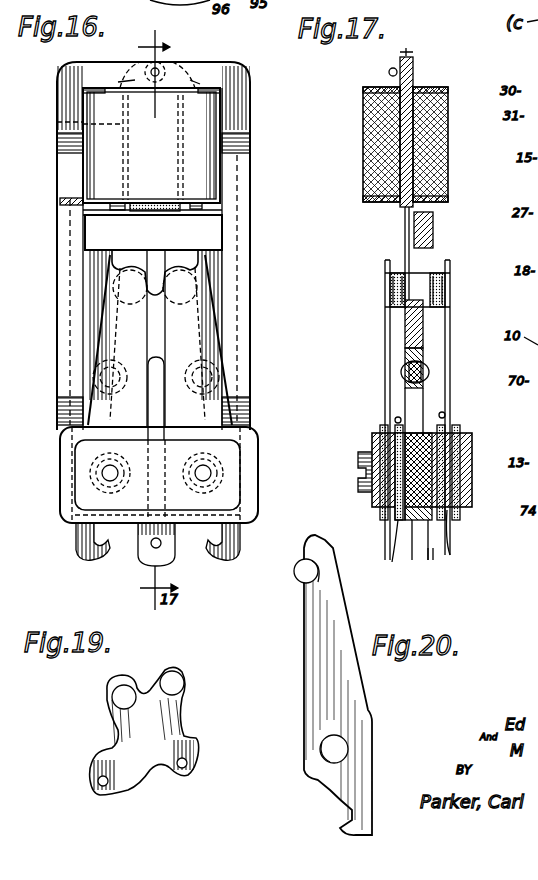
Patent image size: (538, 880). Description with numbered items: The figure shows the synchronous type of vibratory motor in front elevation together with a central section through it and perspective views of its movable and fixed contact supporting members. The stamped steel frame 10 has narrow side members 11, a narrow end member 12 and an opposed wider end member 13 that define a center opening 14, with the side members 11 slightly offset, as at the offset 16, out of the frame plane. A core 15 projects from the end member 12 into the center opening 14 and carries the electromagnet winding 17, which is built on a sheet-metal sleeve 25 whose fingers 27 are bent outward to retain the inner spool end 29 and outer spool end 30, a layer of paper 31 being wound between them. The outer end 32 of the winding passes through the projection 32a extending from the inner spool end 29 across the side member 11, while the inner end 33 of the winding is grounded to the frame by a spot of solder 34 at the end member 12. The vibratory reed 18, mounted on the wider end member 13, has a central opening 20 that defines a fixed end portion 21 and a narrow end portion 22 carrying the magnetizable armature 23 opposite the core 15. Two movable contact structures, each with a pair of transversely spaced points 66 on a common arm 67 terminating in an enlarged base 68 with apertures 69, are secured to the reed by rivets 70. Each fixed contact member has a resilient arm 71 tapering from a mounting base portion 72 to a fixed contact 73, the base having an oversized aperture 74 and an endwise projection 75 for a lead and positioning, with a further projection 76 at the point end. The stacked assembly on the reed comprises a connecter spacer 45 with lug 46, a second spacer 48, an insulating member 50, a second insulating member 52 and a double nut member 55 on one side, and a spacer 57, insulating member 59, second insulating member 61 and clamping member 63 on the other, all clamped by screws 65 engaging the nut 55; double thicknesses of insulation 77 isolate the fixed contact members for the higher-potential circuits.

In FIG. 16, the frame 10 is at (258, 306).
In FIG. 16, the side members 11 is at (245, 216).
In FIG. 17, the side members 11 is at (404, 404).
In FIG. 16, the end member 12 is at (190, 68).
In FIG. 17, the end member 12 is at (414, 62).
In FIG. 17, the end member 13 is at (416, 560).
In FIG. 16, the center opening 14 is at (215, 213).
In FIG. 16, the core 15 is at (158, 212).
In FIG. 17, the core 15 is at (405, 131).
In FIG. 16, the offset 16 is at (255, 406).
In FIG. 16, the electromagnet winding 17 is at (258, 106).
In FIG. 17, the electromagnet winding 17 is at (440, 101).
In FIG. 16, the vibratory reed 18 is at (210, 272).
In FIG. 17, the vibratory reed 18 is at (425, 330).
In FIG. 16, the central opening 20 is at (113, 262).
In FIG. 17, the fixed end portion 21 is at (422, 434).
In FIG. 17, the end portion 22 is at (413, 232).
In FIG. 16, the armature 23 is at (205, 238).
In FIG. 17, the armature 23 is at (435, 233).
In FIG. 16, the sleeve 25 is at (57, 121).
In FIG. 17, the sleeve 25 is at (375, 185).
In FIG. 16, the fingers 27 is at (118, 82).
In FIG. 16, the inner spool end 29 is at (215, 210).
In FIG. 17, the inner spool end 29 is at (446, 199).
In FIG. 17, the outer spool end 30 is at (440, 88).
In FIG. 17, the layer of paper 31 is at (425, 160).
In FIG. 16, the outer end of the winding 32 is at (70, 196).
In FIG. 16, the projection 32a is at (70, 206).
In FIG. 16, the inner end of the winding 33 is at (148, 105).
In FIG. 16, the spot of solder 34 is at (172, 70).
In FIG. 17, the spot of solder 34 is at (390, 71).
In FIG. 17, the connecter spacer 45 is at (452, 555).
In FIG. 17, the lug 46 is at (430, 560).
In FIG. 17, the second spacer 48 is at (474, 499).
In FIG. 17, the insulating member 50 is at (443, 412).
In FIG. 17, the second insulating member 52 is at (458, 420).
In FIG. 16, the double nut member 55 is at (232, 485).
In FIG. 17, the double nut member 55 is at (475, 440).
In FIG. 17, the spacer 57 is at (399, 566).
In FIG. 17, the insulating member 59 is at (396, 419).
In FIG. 17, the second insulating member 61 is at (393, 533).
In FIG. 17, the clamping member 63 is at (376, 502).
In FIG. 17, the screws 65 is at (360, 455).
In FIG. 17, the contact points 66 is at (428, 272).
In FIG. 19, the contact points 66 is at (114, 698).
In FIG. 16, the arm 67 is at (158, 343).
In FIG. 17, the arm 67 is at (423, 345).
In FIG. 19, the arm 67 is at (168, 716).
In FIG. 19, the base 68 is at (158, 772).
In FIG. 19, the apertures 69 is at (103, 787).
In FIG. 17, the rivets 70 is at (430, 371).
In FIG. 16, the arm 71 is at (108, 340).
In FIG. 20, the arm 71 is at (306, 668).
In FIG. 20, the mounting base portion 72 is at (305, 772).
In FIG. 16, the fixed contact 73 is at (187, 287).
In FIG. 17, the fixed contact 73 is at (442, 283).
In FIG. 20, the fixed contact 73 is at (295, 578).
In FIG. 17, the aperture 74 is at (529, 507).
In FIG. 20, the aperture 74 is at (338, 748).
In FIG. 16, the endwise projection 75 is at (95, 553).
In FIG. 20, the endwise projection 75 is at (362, 790).
In FIG. 20, the projection 76 is at (310, 538).
In FIG. 16, the double thicknesses of insulation 77 is at (247, 444).
In FIG. 17, the double thicknesses of insulation 77 is at (385, 520).